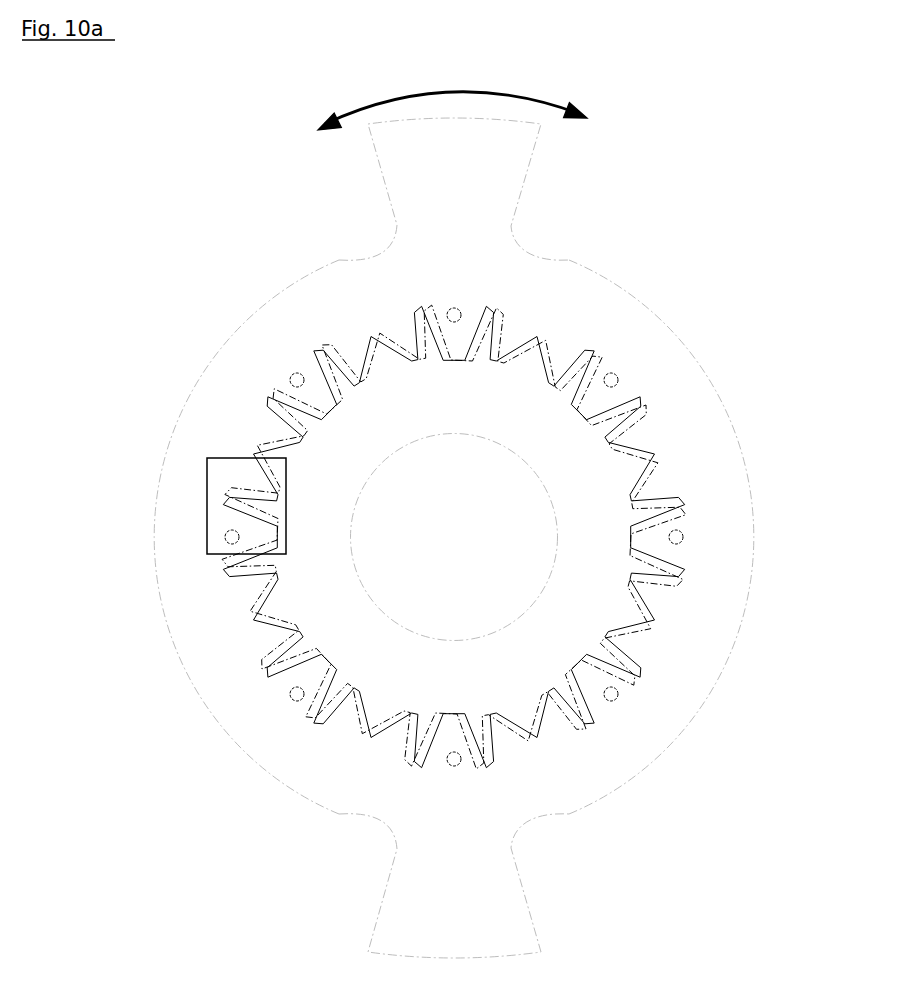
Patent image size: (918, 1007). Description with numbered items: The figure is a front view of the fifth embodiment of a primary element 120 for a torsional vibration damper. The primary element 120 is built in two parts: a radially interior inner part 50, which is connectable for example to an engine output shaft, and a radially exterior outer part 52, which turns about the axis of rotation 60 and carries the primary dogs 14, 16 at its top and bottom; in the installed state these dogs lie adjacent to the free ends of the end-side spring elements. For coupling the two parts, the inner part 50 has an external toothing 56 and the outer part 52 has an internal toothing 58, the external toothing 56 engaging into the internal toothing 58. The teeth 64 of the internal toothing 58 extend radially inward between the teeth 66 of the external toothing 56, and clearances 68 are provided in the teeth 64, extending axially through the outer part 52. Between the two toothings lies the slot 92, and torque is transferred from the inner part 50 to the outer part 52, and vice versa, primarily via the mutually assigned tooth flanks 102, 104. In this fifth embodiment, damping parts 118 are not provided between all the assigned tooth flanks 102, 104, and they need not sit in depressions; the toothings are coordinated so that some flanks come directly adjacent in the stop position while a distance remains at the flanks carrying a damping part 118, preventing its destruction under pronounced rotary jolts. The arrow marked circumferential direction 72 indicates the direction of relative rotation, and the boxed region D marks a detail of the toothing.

The primary dog 14 is at (432, 190).
The primary dog 16 is at (493, 903).
The inner part 50 is at (398, 680).
The outer part 52 is at (370, 792).
The external toothing 56 is at (322, 711).
The internal toothing 58 is at (617, 690).
The axis of rotation 60 is at (455, 538).
The teeth 64 is at (456, 341).
The teeth 66 is at (298, 653).
The clearances 68 is at (291, 377).
The circumferential direction 72 is at (447, 91).
The slot 92 is at (572, 740).
The tooth flank 102 is at (662, 553).
The tooth flank 104 is at (663, 553).
The damping parts 118 is at (640, 412).
The primary element 120 is at (690, 214).
The detail region D is at (207, 488).